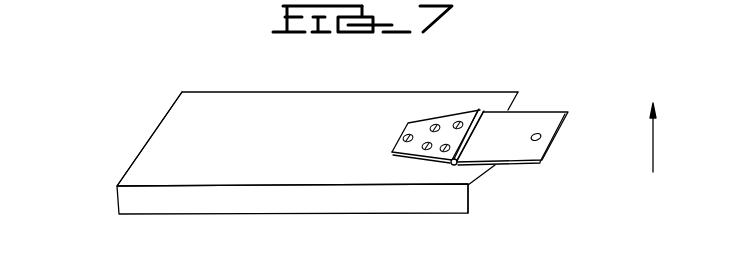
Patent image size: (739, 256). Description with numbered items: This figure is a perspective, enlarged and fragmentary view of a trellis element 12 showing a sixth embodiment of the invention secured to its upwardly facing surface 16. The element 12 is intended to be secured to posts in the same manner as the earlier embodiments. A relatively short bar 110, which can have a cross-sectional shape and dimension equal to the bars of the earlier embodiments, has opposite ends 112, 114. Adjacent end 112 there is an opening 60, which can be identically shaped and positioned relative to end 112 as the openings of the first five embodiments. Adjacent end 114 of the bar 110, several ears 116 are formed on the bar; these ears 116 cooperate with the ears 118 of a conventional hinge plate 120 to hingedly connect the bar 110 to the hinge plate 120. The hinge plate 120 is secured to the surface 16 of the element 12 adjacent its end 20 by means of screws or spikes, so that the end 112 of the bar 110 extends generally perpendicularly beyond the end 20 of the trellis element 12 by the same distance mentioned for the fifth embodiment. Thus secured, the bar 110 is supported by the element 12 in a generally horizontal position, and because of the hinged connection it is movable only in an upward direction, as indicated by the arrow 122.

The element 12 is at (206, 113).
The surface 16 is at (272, 103).
The end 20 is at (482, 180).
The opening 60 is at (538, 142).
The bar 110 is at (529, 118).
The end 112 is at (553, 141).
The end 114 is at (454, 121).
The ears 116 is at (461, 120).
The ears 118 is at (438, 192).
The hinge plate 120 is at (408, 127).
The arrow 122 is at (655, 151).